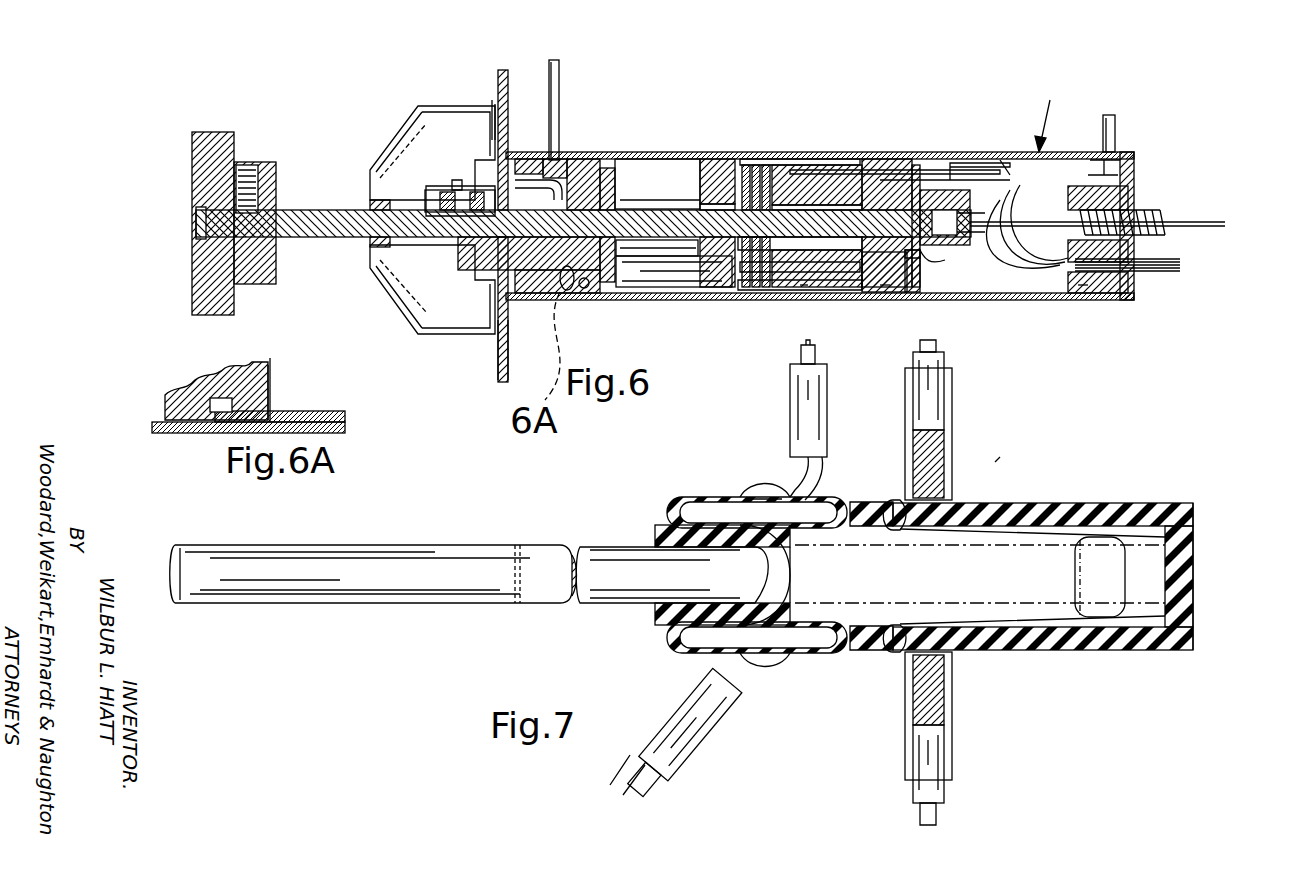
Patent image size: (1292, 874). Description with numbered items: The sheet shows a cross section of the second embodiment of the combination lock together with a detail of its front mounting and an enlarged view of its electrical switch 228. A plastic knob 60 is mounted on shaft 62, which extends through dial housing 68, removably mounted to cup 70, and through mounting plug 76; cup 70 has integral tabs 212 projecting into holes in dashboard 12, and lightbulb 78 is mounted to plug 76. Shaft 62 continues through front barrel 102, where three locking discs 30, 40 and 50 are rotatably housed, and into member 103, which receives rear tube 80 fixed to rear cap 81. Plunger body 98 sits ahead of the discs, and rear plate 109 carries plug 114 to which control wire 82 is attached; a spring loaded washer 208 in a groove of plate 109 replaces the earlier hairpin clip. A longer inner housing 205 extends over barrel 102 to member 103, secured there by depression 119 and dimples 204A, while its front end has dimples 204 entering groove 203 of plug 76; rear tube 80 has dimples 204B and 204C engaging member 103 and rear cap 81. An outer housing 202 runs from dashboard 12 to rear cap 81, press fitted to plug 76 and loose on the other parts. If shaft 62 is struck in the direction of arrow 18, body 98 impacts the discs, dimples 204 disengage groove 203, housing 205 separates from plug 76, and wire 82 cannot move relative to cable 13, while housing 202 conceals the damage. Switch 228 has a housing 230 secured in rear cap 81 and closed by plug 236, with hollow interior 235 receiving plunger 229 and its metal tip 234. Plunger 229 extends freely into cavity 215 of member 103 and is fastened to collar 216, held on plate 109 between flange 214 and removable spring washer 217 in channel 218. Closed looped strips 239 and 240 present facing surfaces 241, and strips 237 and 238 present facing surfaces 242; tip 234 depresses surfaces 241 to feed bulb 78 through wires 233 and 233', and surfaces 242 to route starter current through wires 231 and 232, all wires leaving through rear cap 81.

In FIG. 6, the dashboard 12 is at (500, 100).
In FIG. 6, the cable 13 is at (1150, 215).
In FIG. 6, the arrow 18 is at (168, 219).
In FIG. 6, the locking disc 30 is at (756, 165).
In FIG. 6, the locking disc 40 is at (770, 195).
In FIG. 6, the locking disc 50 is at (766, 165).
In FIG. 6, the plastic knob 60 is at (190, 318).
In FIG. 6, the shaft 62 is at (308, 237).
In FIG. 6, the dial housing 68 is at (400, 320).
In FIG. 6, the cup 70 is at (496, 360).
In FIG. 6, the mounting plug 76 is at (560, 293).
In FIG. 6A, the mounting plug 76 is at (285, 375).
In FIG. 6, the electric lightbulb 78 is at (445, 192).
In FIG. 6, the rear tube 80 is at (1015, 297).
In FIG. 6, the rear cap 81 is at (1128, 298).
In FIG. 6, the control wire 82 is at (1195, 228).
In FIG. 6, the plunger body 98 is at (740, 300).
In FIG. 6, the front barrel 102 is at (710, 160).
In FIG. 6, the member 103 is at (860, 162).
In FIG. 6, the rear plate 109 is at (945, 255).
In FIG. 6, the plug 114 is at (940, 175).
In FIG. 6, the depression 119 is at (790, 160).
In FIG. 6, the outer housing 202 is at (675, 290).
In FIG. 6A, the outer housing 202 is at (205, 434).
In FIG. 6, the groove 203 is at (592, 160).
In FIG. 6A, the groove 203 is at (275, 400).
In FIG. 6, the dimples 204 is at (608, 296).
In FIG. 6A, the dimples 204 is at (168, 405).
In FIG. 6, the dimples 204A is at (800, 293).
In FIG. 6, the dimples 204B is at (895, 293).
In FIG. 6, the dimples 204C is at (1080, 300).
In FIG. 6, the inner housing 205 is at (655, 170).
In FIG. 6A, the inner housing 205 is at (330, 398).
In FIG. 6, the spring loaded washer 208 is at (990, 255).
In FIG. 6, the tabs 212 is at (492, 104).
In FIG. 6, the flange 214 is at (825, 293).
In FIG. 6, the cavity 215 is at (746, 165).
In FIG. 6, the collar 216 is at (908, 293).
In FIG. 6, the removable spring washer 217 is at (930, 293).
In FIG. 6, the channel 218 is at (970, 205).
In FIG. 6, the electrical switch 228 is at (1000, 448).
In FIG. 7, the electrical switch 228 is at (1000, 448).
In FIG. 6, the plunger 229 is at (985, 162).
In FIG. 7, the plunger 229 is at (455, 545).
In FIG. 6, the switch housing 230 is at (1075, 152).
In FIG. 7, the switch housing 230 is at (1058, 652).
In FIG. 6, the wire 231 is at (1175, 255).
In FIG. 7, the wire 231 is at (948, 355).
In FIG. 6, the wire 232 is at (1178, 270).
In FIG. 7, the wire 232 is at (940, 810).
In FIG. 6, the wire 233 is at (964, 322).
In FIG. 7, the wire 233 is at (784, 420).
In FIG. 6, the wire 233' is at (864, 213).
In FIG. 7, the wire 233' is at (676, 735).
In FIG. 7, the metal tip 234 is at (672, 498).
In FIG. 7, the hollow interior 235 is at (940, 584).
In FIG. 7, the plug 236 is at (1210, 650).
In FIG. 7, the metal strip 237 is at (880, 500).
In FIG. 7, the metal strip 238 is at (895, 652).
In FIG. 7, the closed looped metal strip 239 is at (690, 500).
In FIG. 7, the closed looped metal strip 240 is at (672, 653).
In FIG. 7, the mutually facing surfaces 241 is at (805, 565).
In FIG. 7, the mutually facing surfaces 242 is at (1076, 583).